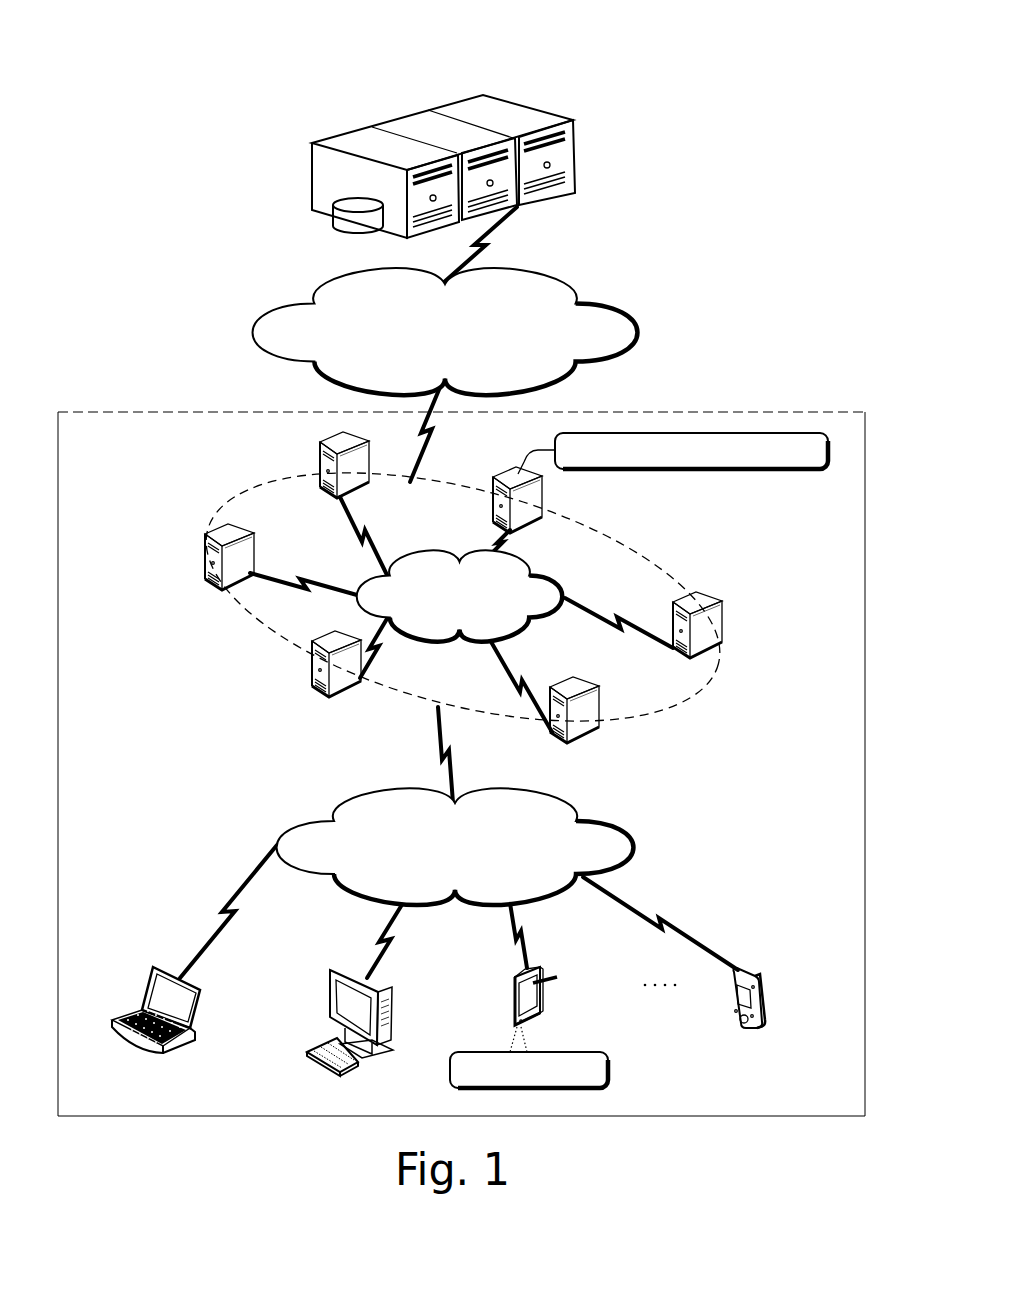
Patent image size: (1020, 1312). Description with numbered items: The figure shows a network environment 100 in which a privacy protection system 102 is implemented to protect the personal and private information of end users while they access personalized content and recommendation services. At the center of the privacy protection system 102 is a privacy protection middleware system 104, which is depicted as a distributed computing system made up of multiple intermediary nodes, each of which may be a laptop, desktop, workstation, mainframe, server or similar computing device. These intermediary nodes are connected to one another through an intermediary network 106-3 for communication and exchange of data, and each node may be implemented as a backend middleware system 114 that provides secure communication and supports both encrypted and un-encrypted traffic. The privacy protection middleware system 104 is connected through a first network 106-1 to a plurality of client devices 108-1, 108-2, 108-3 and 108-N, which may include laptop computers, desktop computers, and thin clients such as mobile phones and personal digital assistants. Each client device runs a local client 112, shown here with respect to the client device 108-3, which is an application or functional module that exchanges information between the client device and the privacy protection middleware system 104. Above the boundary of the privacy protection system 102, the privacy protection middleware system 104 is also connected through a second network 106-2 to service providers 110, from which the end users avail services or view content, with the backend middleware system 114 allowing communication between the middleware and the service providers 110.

The network environment 100 is at (455, 56).
The privacy protection system 102 is at (188, 412).
The privacy protection middleware system 104 is at (222, 512).
The first network 106-1 is at (475, 870).
The second network 106-2 is at (463, 355).
The intermediary network 106-3 is at (520, 610).
The client device 108-1 is at (180, 978).
The client device 108-2 is at (367, 978).
The client device 108-3 is at (515, 980).
The client device 108-N is at (732, 975).
The service provider 110 is at (427, 110).
The local client 112 is at (592, 1081).
The backend middleware system 114 is at (817, 460).